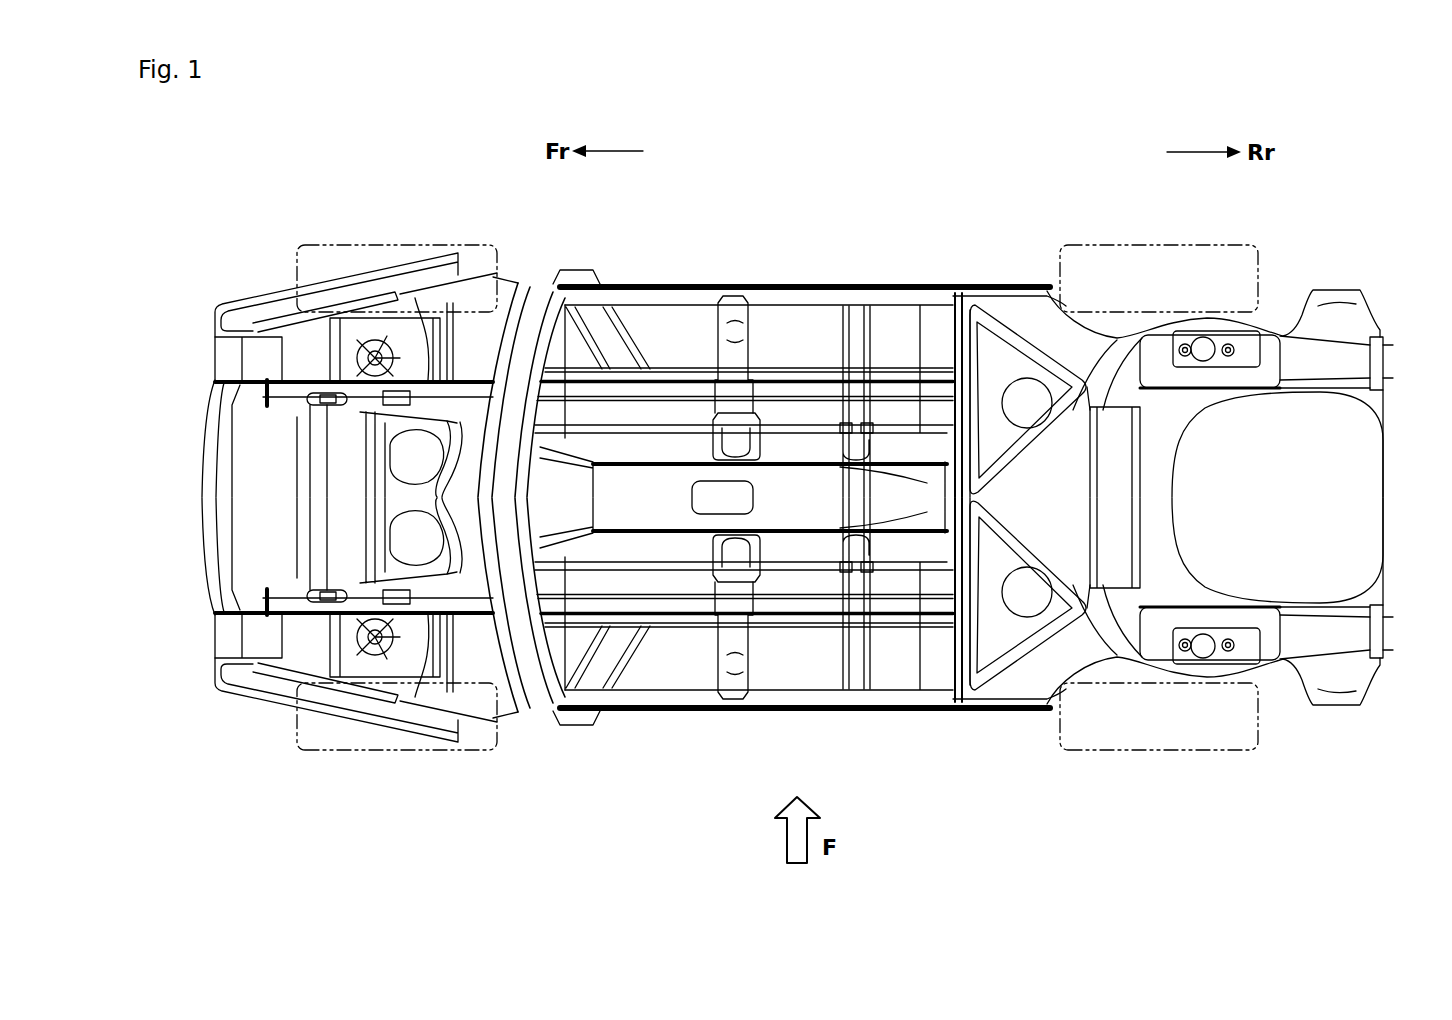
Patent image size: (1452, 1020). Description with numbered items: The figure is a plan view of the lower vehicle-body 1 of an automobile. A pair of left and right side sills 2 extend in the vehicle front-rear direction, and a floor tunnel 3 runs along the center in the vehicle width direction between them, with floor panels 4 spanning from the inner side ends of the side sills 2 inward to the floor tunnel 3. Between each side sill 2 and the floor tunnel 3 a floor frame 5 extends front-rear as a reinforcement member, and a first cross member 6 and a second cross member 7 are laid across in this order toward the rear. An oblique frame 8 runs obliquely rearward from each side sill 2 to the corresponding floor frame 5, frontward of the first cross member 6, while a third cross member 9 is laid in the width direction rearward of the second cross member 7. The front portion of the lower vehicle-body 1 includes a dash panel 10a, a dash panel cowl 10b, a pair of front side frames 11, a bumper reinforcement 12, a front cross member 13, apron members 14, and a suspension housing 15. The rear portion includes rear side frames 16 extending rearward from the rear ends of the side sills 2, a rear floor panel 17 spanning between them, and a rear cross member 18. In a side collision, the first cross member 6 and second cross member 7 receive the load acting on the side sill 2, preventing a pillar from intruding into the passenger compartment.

The lower vehicle-body 1 is at (996, 196).
The side sill 2 is at (800, 302).
The floor tunnel 3 is at (863, 497).
The floor panel 4 is at (679, 324).
The floor frame 5 is at (813, 376).
The first cross member 6 is at (752, 328).
The second cross member 7 is at (871, 360).
The oblique frame 8 is at (622, 335).
The third cross member 9 is at (942, 310).
The dash panel 10a is at (541, 705).
The dash panel cowl 10b is at (541, 292).
The front side frame 11 is at (487, 297).
The bumper reinforcement 12 is at (214, 457).
The front cross member 13 is at (300, 506).
The apron member 14 is at (408, 272).
The suspension housing 15 is at (347, 300).
The rear side frame 16 is at (1023, 314).
The rear floor panel 17 is at (1173, 413).
The rear cross member 18 is at (1133, 533).